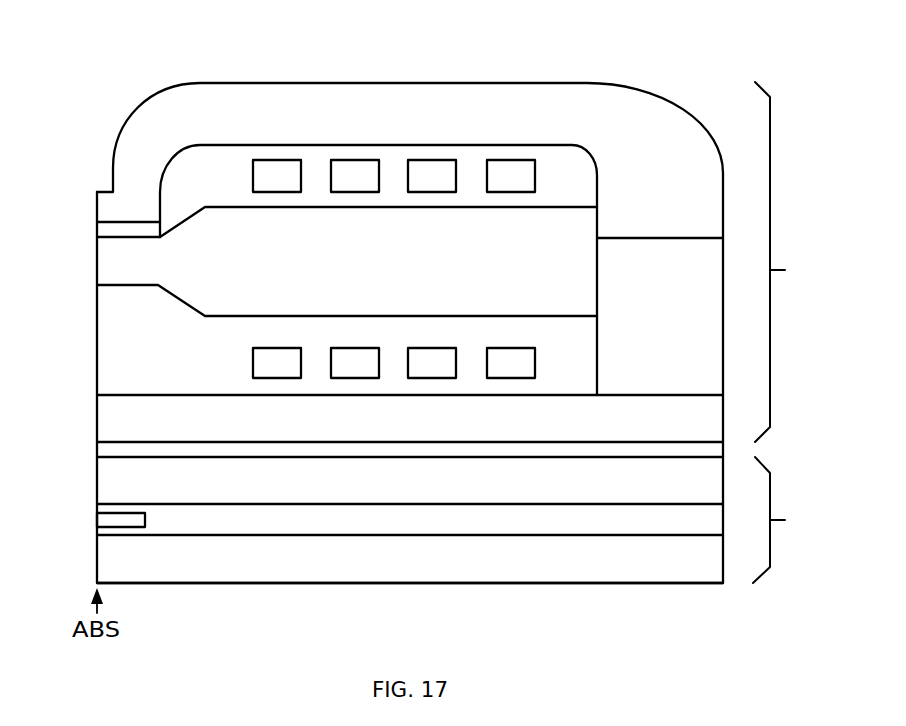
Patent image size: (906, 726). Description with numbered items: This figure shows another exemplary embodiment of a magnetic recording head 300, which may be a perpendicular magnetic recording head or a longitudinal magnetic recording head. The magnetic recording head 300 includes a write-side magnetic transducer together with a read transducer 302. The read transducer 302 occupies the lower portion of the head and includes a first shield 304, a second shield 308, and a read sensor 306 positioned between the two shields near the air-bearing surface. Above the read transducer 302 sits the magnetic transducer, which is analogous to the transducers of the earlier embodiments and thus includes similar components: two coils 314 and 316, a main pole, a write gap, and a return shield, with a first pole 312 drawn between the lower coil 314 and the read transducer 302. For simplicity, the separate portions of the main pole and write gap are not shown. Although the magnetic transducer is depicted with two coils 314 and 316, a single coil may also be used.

The magnetic recording head 300 is at (430, 46).
The coil 316 is at (222, 175).
The coil 314 is at (222, 363).
The first pole (P1) 312 is at (97, 420).
The shield 308 is at (97, 488).
The read sensor 306 is at (145, 520).
The shield 304 is at (645, 583).
The read transducer 302 is at (783, 520).